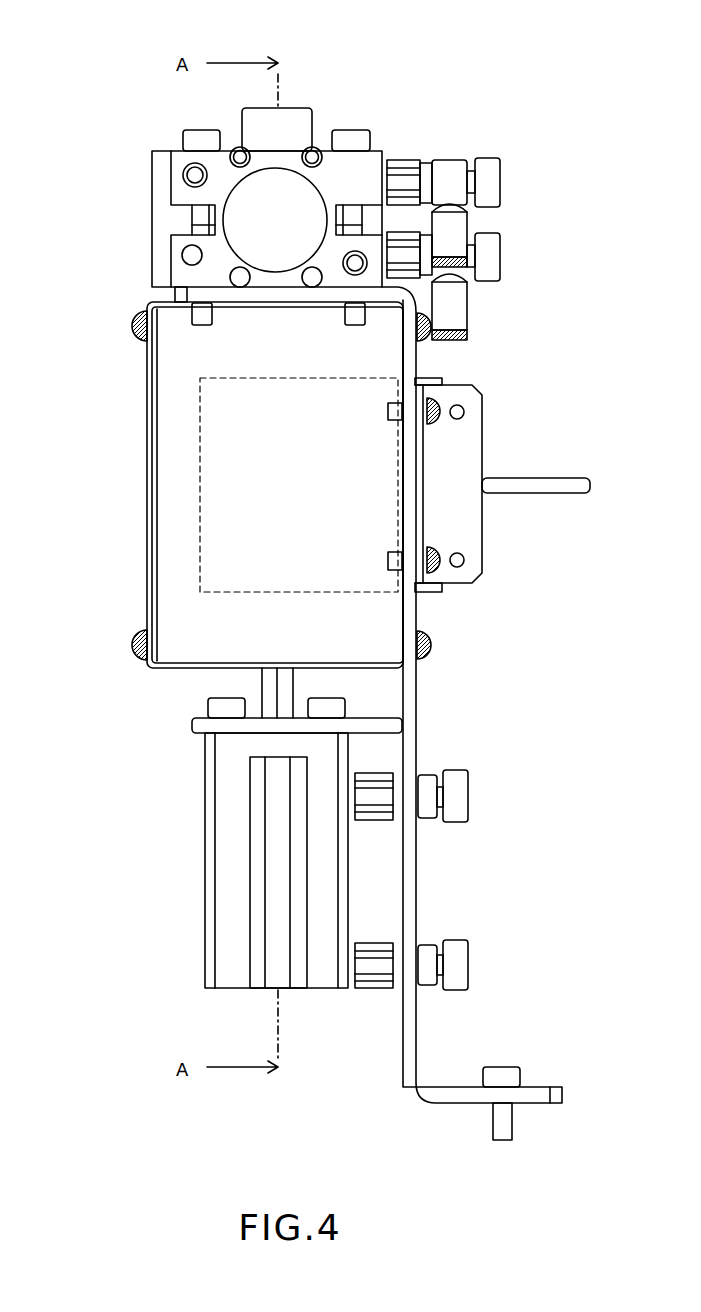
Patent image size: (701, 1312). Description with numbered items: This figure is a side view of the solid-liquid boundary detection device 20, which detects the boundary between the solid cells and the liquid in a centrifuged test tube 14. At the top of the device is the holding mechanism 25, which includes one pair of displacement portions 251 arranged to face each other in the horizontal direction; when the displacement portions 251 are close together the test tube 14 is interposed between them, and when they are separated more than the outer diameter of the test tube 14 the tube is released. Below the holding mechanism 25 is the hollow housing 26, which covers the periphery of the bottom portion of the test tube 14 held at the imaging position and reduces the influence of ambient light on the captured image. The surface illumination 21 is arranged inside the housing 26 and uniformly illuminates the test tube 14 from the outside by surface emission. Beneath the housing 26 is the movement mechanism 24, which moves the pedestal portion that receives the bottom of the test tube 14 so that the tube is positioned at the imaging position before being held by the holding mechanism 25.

The solid-liquid boundary detection device 20 is at (505, 72).
The holding mechanism 25 is at (140, 215).
The displacement portions 251 is at (195, 130).
The test tube 14 is at (315, 110).
The housing 26 is at (165, 577).
The surface illumination 21 is at (200, 445).
The movement mechanism 24 is at (205, 850).